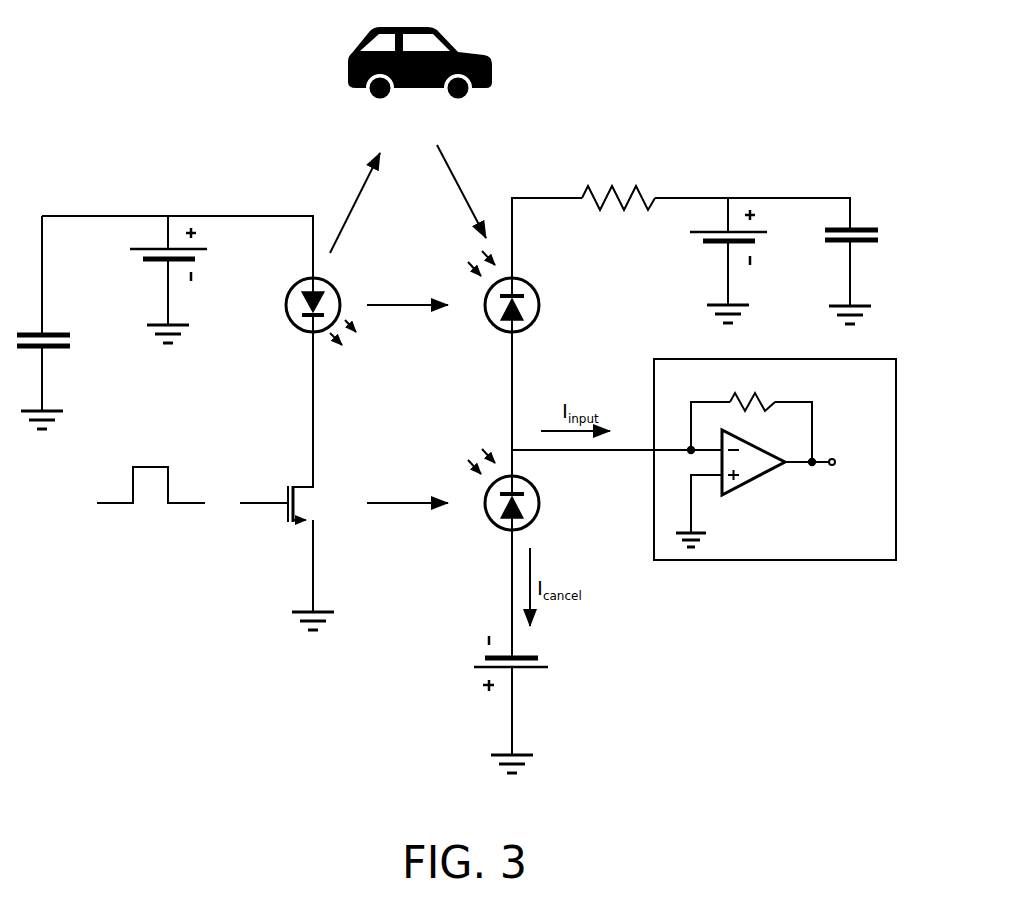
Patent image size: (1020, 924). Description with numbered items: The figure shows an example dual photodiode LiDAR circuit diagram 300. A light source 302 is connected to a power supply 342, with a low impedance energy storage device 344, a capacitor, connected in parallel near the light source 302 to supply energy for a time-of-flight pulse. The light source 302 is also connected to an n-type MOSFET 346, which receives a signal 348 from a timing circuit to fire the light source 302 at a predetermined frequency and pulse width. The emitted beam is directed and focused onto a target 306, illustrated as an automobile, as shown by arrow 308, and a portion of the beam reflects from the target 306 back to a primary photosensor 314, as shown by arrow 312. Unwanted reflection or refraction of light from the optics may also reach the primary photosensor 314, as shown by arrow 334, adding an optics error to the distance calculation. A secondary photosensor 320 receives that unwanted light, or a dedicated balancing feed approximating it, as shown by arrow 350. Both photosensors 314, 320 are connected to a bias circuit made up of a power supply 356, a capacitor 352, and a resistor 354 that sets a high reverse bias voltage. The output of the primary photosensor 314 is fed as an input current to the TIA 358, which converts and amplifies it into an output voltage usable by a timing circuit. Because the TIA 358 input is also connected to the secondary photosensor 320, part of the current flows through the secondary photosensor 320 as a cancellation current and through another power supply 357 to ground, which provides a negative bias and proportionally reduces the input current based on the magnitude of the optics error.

The dual photodiode LiDAR circuit diagram 300 is at (154, 102).
The light source 302 is at (276, 317).
The target 306 is at (440, 135).
The arrow 308 is at (352, 200).
The arrow 312 is at (470, 196).
The primary photosensor 314 is at (590, 317).
The secondary photosensor 320 is at (590, 515).
The arrow 334 is at (393, 305).
The power supply 342 is at (126, 265).
The low impedance energy storage device 344 is at (126, 352).
The n-type MOSFET 346 is at (283, 470).
The signal 348 is at (167, 532).
The arrow 350 is at (400, 503).
The capacitor 352 is at (935, 247).
The resistor 354 is at (640, 174).
The power supply 356 is at (685, 249).
The power supply 357 is at (595, 677).
The TIA 358 is at (880, 552).